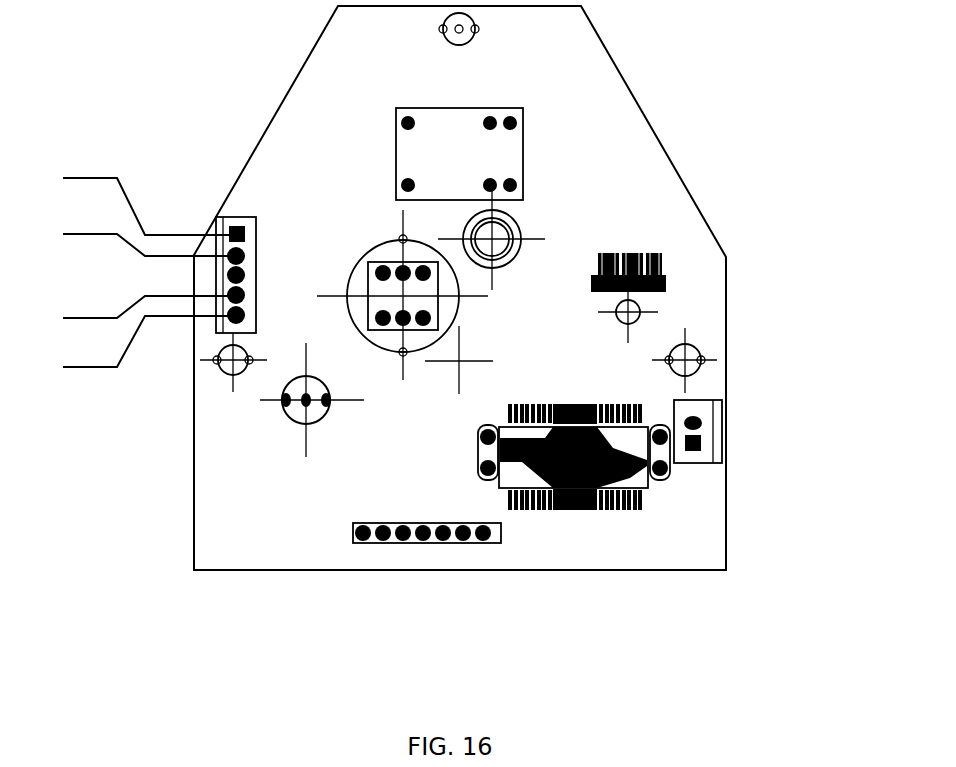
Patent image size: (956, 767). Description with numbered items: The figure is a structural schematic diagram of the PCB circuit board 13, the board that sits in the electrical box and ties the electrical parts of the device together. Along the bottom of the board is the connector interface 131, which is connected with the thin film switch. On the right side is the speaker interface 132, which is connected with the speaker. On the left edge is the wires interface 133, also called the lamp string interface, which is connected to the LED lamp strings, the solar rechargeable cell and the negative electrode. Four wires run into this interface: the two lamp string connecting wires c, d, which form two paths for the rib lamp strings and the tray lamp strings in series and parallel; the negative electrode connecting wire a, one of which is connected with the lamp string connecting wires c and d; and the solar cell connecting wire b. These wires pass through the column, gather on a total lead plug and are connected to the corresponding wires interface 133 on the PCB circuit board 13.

The PCB circuit board 13 is at (633, 192).
The connector interface 131 is at (428, 540).
The speaker interface 132 is at (705, 431).
The wires interface 133 is at (230, 271).
The negative electrode connecting wire a is at (149, 301).
The solar cell connecting wire b is at (149, 342).
The lamp string connecting wire c is at (150, 186).
The lamp string connecting wire d is at (149, 225).